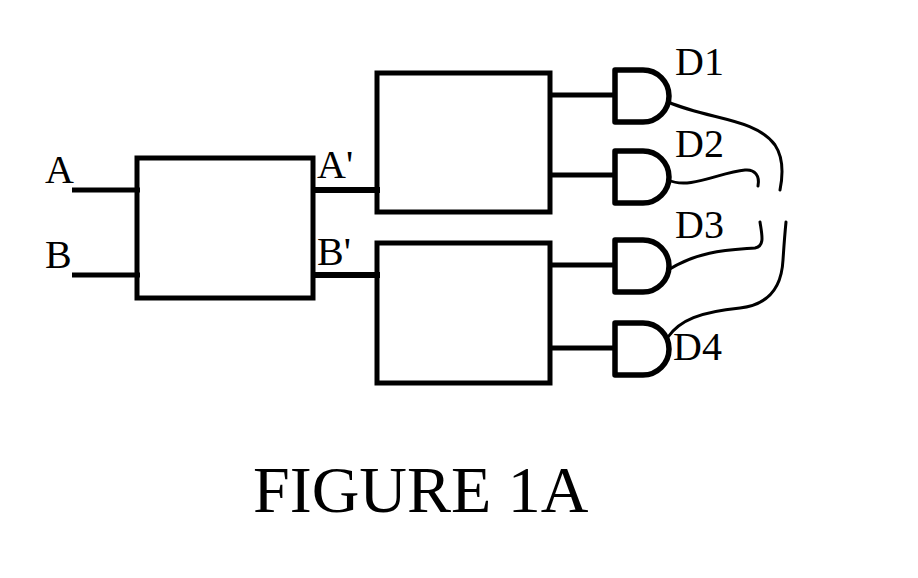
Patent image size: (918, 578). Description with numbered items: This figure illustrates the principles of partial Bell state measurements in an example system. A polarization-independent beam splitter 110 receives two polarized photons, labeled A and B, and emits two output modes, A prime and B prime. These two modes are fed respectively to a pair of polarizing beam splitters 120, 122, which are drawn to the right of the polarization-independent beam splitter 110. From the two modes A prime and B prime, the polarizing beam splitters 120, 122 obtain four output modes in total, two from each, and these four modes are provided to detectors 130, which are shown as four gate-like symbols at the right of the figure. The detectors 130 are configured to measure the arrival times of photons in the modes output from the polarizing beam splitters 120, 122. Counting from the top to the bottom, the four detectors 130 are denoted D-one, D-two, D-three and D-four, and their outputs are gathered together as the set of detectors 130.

The polarization-independent beam splitter 110 is at (252, 248).
The polarizing beam splitter 120 is at (428, 165).
The polarizing beam splitter 122 is at (432, 330).
The detectors 130 is at (735, 219).